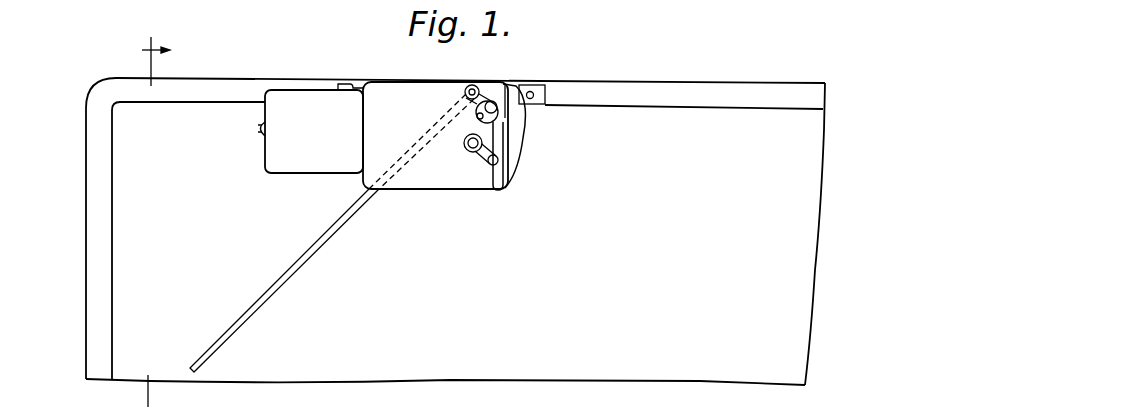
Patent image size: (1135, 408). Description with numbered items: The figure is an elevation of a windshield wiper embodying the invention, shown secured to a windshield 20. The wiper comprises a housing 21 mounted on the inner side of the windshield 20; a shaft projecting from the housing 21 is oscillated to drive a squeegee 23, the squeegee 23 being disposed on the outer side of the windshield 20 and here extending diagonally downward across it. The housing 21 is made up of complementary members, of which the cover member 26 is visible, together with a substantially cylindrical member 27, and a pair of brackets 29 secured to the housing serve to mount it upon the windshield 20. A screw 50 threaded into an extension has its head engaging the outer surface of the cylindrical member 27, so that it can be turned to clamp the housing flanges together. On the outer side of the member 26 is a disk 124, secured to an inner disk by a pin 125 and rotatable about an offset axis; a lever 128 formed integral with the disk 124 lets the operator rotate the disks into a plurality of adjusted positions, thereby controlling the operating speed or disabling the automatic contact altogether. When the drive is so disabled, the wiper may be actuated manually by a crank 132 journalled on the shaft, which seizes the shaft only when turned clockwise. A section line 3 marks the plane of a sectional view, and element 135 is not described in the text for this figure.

The section line 3- 3 is at (156, 217).
The windshield 20 is at (627, 91).
The housing 21 is at (425, 192).
The squeegee 23 is at (308, 249).
The member 26 is at (521, 150).
The substantially cylindrical member 27 is at (285, 100).
The brackets 29 is at (345, 84).
The screw 50 is at (259, 131).
The disk 124 is at (498, 113).
The pin 125 is at (491, 104).
The lever 128 is at (504, 176).
The crank 132 is at (480, 158).
The knob 135 is at (465, 143).